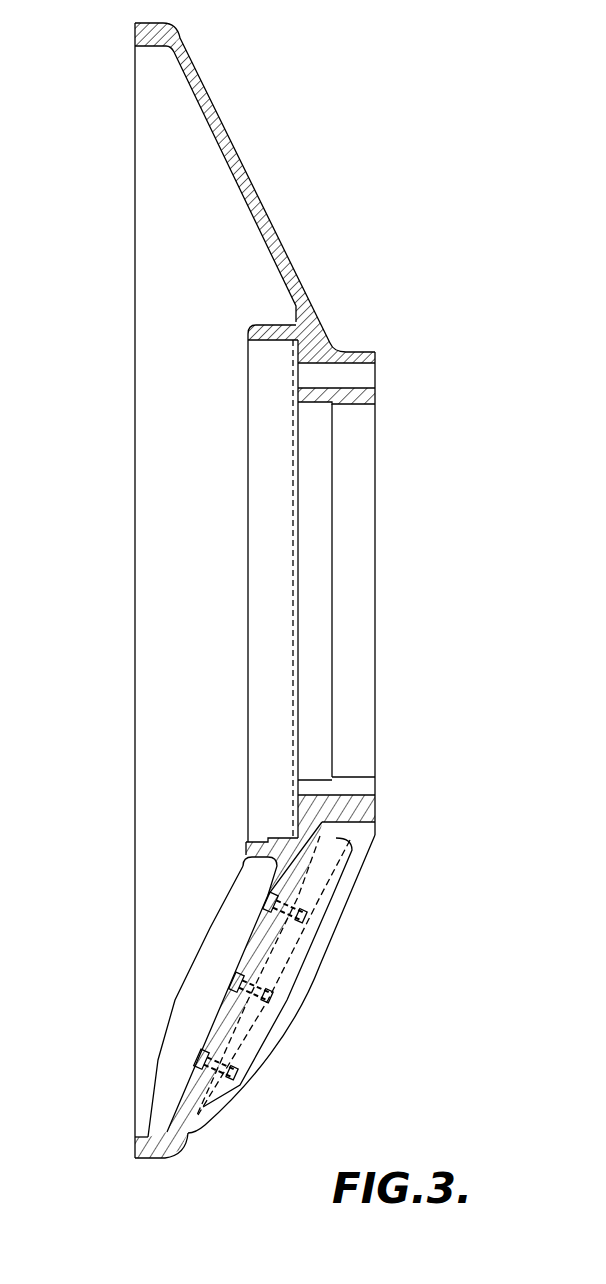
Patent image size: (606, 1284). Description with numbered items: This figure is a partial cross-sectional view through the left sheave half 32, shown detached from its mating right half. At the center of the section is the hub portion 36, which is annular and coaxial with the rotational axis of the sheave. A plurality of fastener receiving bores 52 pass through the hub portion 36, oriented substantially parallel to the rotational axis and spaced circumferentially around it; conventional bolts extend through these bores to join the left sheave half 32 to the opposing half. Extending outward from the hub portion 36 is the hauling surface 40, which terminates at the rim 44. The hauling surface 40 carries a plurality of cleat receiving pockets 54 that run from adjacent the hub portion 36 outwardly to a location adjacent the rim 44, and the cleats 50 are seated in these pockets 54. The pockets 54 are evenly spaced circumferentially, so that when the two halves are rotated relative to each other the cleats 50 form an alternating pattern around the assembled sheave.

The left sheave half 32 is at (133, 620).
The hub portion 36 is at (362, 354).
The hauling surface 40 is at (255, 188).
The rim 44 is at (134, 47).
The cleats 50 is at (330, 936).
The fastener receiving bores 52 is at (366, 378).
The cleat receiving pockets 54 is at (228, 1010).